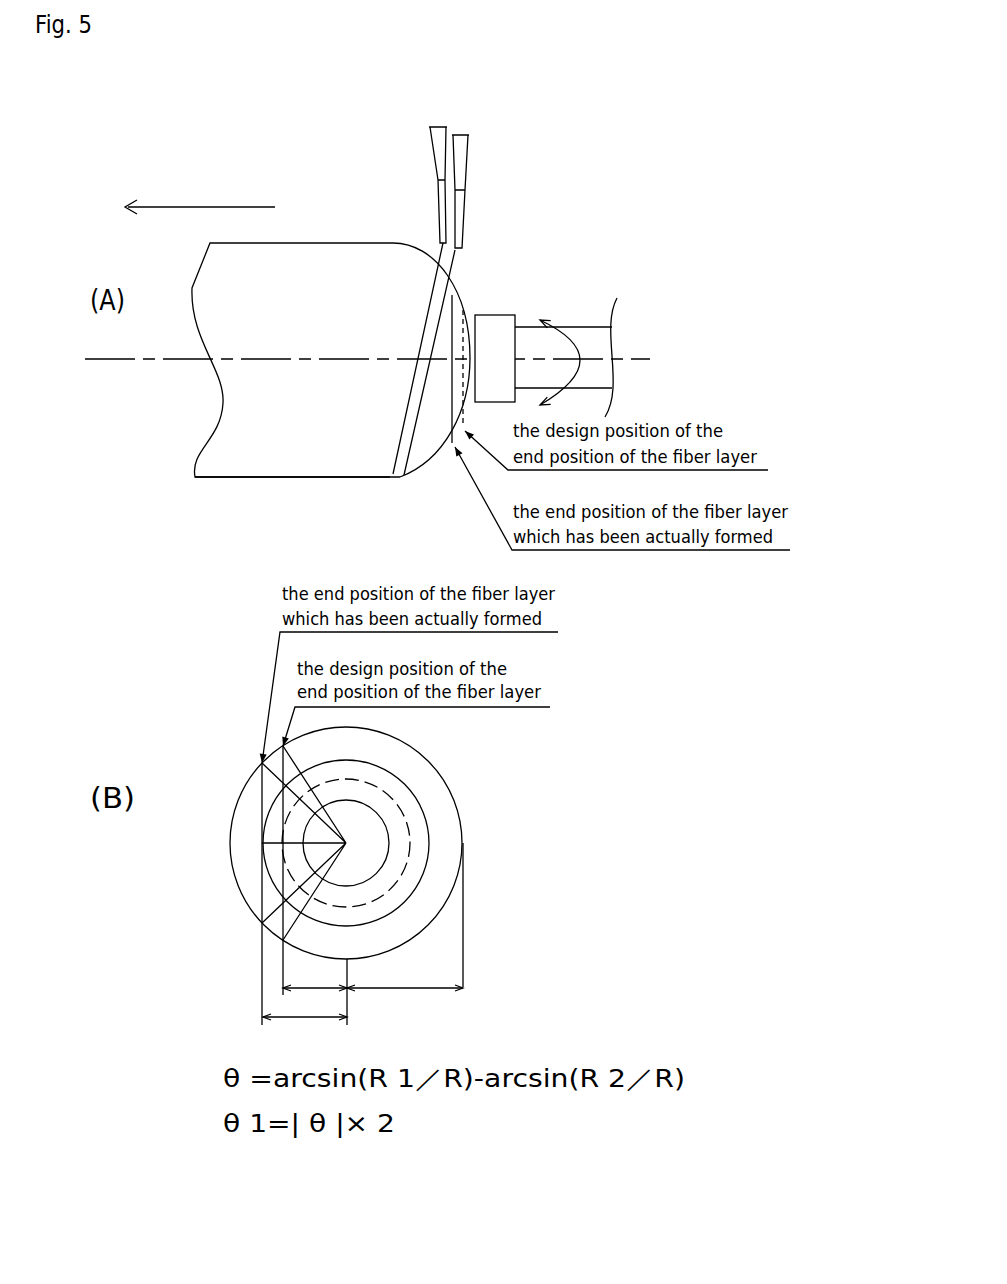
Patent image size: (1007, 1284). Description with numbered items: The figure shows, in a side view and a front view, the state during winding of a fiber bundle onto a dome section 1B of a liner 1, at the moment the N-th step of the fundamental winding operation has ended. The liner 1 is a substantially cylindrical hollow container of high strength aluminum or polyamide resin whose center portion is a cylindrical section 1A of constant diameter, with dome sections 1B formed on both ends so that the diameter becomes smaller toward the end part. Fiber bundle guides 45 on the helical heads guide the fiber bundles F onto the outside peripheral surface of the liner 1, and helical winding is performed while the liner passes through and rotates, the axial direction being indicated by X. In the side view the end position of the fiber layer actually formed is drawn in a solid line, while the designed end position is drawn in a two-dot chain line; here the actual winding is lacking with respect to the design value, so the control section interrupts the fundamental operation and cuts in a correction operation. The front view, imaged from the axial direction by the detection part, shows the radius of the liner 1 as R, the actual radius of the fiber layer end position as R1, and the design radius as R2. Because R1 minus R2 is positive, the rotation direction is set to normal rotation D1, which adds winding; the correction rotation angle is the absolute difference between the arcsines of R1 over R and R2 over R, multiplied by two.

In FIG. 5A, the liner 1 is at (333, 220).
In FIG. 5B, the liner 1 is at (455, 790).
In FIG. 5A, the cylindrical section 1A is at (277, 478).
In FIG. 5A, the dome section 1B is at (413, 477).
In FIG. 5A, the fiber bundle guides 45 is at (461, 221).
In FIG. 5A, the fiber bundle F is at (438, 296).
In FIG. 5A, the rotation direction D1 is at (560, 342).
In FIG. 5A, the axial direction X is at (200, 194).
In FIG. 5B, the radius of the liner R is at (405, 934).
In FIG. 5B, the actual value of the radius of the fiber layer in the end position R1 is at (304, 894).
In FIG. 5B, the design value of the radius of the fiber layer in the end position R2 is at (315, 870).